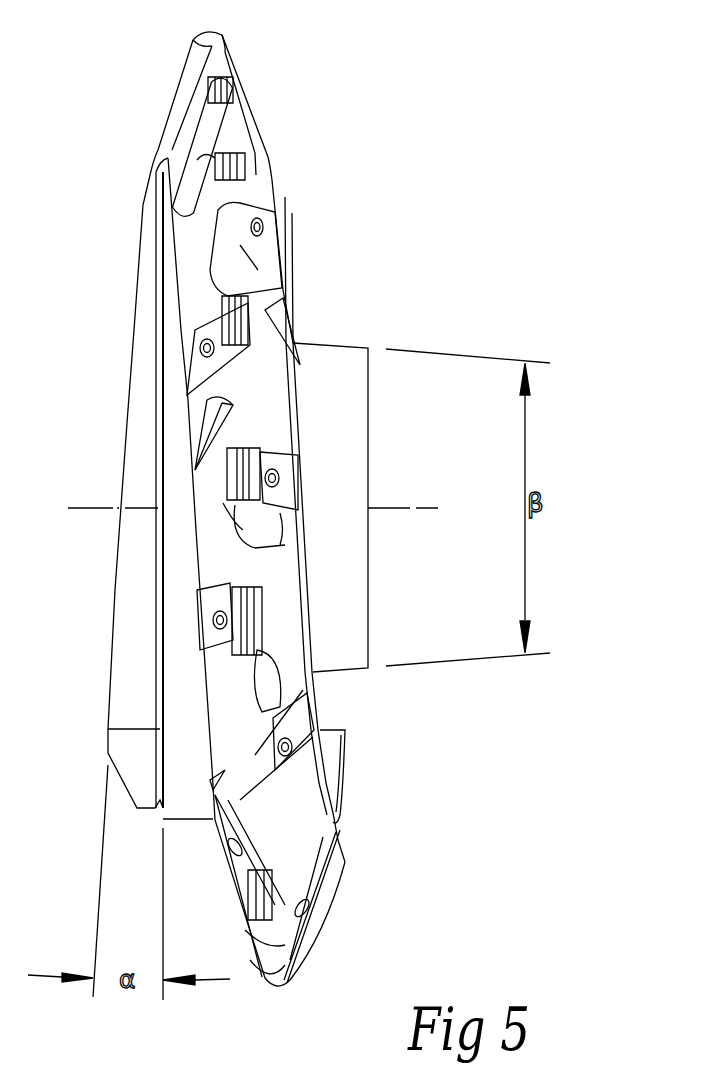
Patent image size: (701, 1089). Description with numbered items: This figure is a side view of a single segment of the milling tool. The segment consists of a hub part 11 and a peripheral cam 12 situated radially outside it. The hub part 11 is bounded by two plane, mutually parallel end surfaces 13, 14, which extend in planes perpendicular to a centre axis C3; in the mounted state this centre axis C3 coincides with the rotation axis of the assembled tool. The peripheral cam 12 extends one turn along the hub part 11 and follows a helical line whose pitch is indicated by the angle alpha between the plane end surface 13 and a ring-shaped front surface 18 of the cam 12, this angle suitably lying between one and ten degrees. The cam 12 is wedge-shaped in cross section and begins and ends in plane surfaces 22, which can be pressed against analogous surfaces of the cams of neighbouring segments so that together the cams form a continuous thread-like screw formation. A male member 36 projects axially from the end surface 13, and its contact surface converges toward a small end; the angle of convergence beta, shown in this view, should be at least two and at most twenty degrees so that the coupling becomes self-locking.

The hub part 11 is at (284, 196).
The peripheral cam 12 is at (345, 818).
The end surface 13 is at (293, 250).
The end surface 14 is at (162, 548).
The front surface 18 is at (123, 423).
The plane surface 22 is at (333, 729).
The male member 36 is at (352, 342).
The centre axis C3 is at (395, 508).